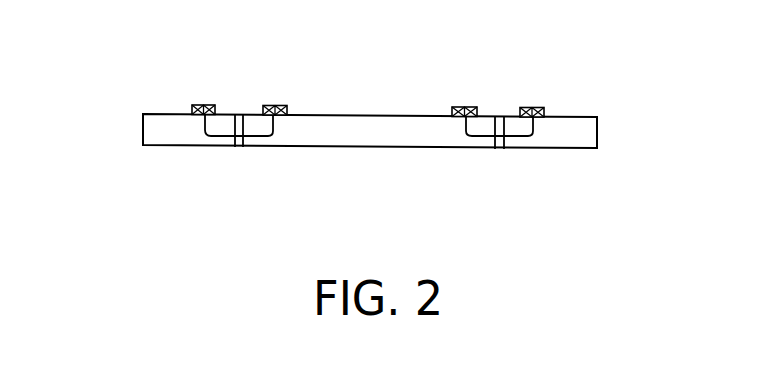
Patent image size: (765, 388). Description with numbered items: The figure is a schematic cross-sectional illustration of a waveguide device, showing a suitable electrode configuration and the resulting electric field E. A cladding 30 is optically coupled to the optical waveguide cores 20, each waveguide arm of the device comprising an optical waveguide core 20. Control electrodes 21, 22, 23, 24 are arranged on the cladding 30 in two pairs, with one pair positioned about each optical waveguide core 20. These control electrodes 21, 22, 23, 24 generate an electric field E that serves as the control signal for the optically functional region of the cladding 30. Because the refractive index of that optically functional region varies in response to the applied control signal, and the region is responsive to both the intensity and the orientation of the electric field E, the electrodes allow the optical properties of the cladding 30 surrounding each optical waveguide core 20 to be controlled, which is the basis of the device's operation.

The cladding 30 is at (143, 137).
The control electrode 21 is at (207, 105).
The control electrode 22 is at (273, 105).
The control electrode 23 is at (465, 107).
The control electrode 24 is at (534, 108).
The optical waveguide core 20 is at (240, 147).
The electric field E is at (273, 125).